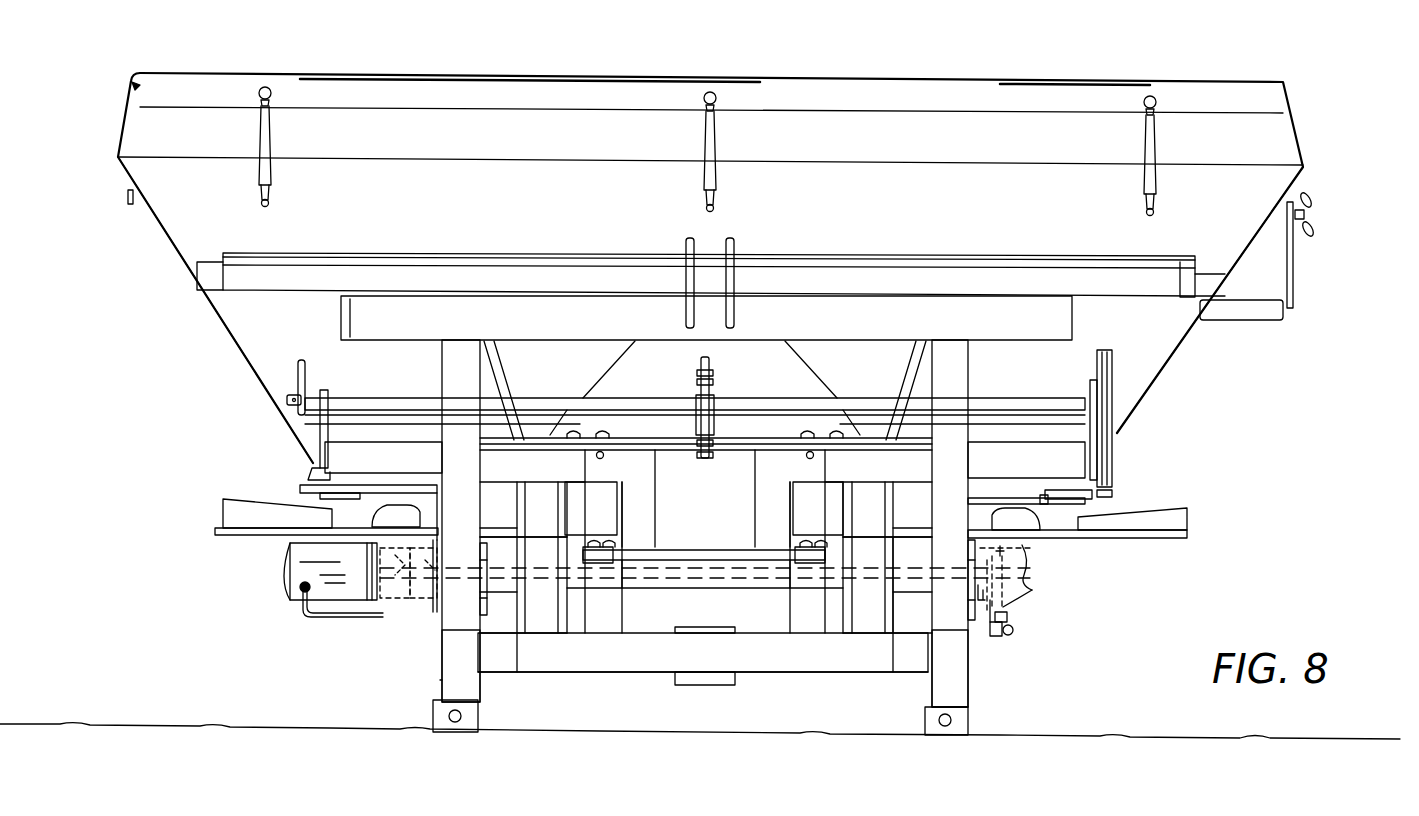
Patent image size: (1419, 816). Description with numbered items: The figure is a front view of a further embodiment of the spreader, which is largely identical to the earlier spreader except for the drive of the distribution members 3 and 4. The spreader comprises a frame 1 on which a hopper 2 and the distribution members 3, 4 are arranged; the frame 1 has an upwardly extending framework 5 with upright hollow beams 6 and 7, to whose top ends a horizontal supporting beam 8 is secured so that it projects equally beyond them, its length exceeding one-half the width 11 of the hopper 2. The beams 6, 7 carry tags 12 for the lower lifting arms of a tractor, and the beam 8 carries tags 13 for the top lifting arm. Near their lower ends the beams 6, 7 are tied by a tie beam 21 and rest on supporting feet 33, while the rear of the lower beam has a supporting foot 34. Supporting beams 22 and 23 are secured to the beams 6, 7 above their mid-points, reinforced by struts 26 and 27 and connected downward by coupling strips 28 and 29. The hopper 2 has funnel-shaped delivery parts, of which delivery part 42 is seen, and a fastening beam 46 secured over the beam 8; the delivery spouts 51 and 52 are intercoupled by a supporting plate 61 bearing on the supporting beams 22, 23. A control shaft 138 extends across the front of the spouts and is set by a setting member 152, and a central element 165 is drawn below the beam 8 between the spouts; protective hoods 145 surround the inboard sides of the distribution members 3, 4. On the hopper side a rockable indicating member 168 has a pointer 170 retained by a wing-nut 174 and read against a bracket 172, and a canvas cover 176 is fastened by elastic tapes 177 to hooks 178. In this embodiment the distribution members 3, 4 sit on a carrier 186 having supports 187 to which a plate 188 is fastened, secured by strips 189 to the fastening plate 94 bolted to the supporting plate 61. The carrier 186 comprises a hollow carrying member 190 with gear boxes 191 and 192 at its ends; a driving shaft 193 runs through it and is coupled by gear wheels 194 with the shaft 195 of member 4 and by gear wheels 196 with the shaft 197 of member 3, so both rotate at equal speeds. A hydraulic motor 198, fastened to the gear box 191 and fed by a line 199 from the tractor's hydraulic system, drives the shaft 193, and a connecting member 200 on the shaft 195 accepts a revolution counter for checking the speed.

The frame 1 is at (425, 675).
The hopper 2 is at (160, 237).
The distribution member 3 is at (220, 527).
The distribution member 4 is at (1195, 532).
The framework 5 is at (985, 696).
The upright hollow beam 6 is at (448, 685).
The upright hollow beam 7 is at (955, 685).
The horizontal supporting beam 8 is at (905, 320).
The width of the hopper 11 is at (245, 333).
The tag 12 is at (480, 615).
The tag 13 is at (730, 236).
The tie beam 21 is at (613, 678).
The supporting beam 22 is at (480, 462).
The supporting beam 23 is at (968, 466).
The strut 26 is at (495, 388).
The strut 27 is at (925, 378).
The coupling strip 28 is at (543, 625).
The coupling strip 29 is at (905, 660).
The supporting foot 33 is at (462, 733).
The supporting foot 34 is at (705, 686).
The funnel-shaped delivery part 42 is at (1150, 375).
The fastening beam 46 is at (540, 262).
The delivery spout 51 is at (305, 435).
The delivery spout 52 is at (1110, 452).
The supporting plate 61 is at (740, 445).
The fastening plate 94 is at (752, 452).
The control shaft 138 is at (405, 385).
The protective hood 145 is at (583, 500).
The setting member 152 is at (1112, 370).
The shaft 165 is at (698, 380).
The rockable indicating member 168 is at (1318, 255).
The pointer 170 is at (1294, 282).
The bracket 172 is at (1237, 320).
The wing-nut 174 is at (1308, 203).
The canvas cover 176 is at (523, 67).
The elastic tape 177 is at (270, 140).
The hook 178 is at (272, 203).
The carrier 186 is at (690, 588).
The support 187 is at (600, 563).
The plate 188 is at (722, 535).
The strip 189 is at (760, 490).
The hollow carrying member 190 is at (758, 590).
The gear box 191 is at (420, 612).
The gear box 192 is at (1032, 592).
The driving shaft 193 is at (870, 615).
The gear wheels 194 is at (1040, 573).
The shaft 195 is at (1040, 553).
The gear wheels 196 is at (397, 612).
The shaft 197 is at (447, 525).
The hydraulic motor 198 is at (282, 568).
The line 199 is at (312, 622).
The connecting member 200 is at (1014, 630).